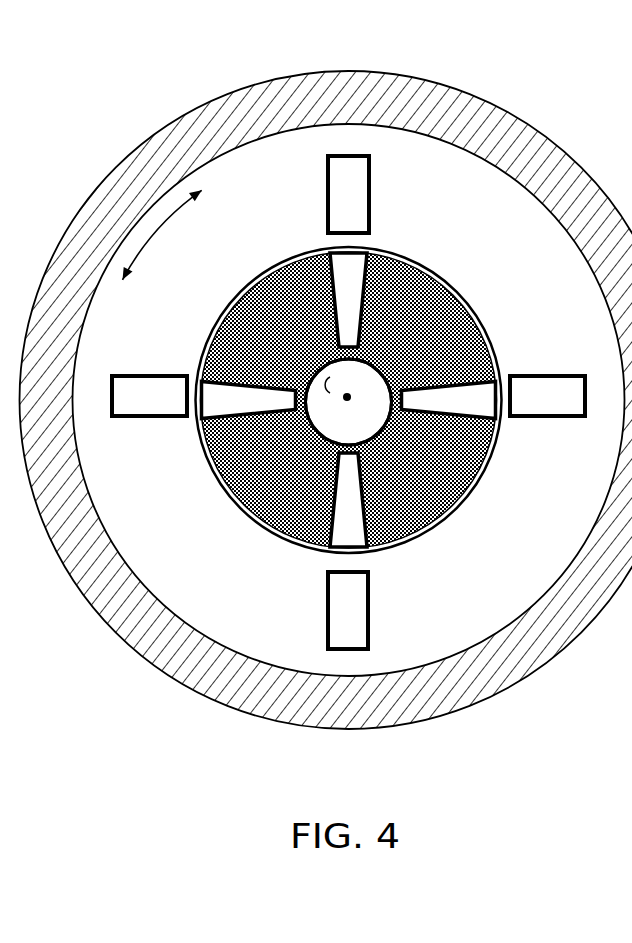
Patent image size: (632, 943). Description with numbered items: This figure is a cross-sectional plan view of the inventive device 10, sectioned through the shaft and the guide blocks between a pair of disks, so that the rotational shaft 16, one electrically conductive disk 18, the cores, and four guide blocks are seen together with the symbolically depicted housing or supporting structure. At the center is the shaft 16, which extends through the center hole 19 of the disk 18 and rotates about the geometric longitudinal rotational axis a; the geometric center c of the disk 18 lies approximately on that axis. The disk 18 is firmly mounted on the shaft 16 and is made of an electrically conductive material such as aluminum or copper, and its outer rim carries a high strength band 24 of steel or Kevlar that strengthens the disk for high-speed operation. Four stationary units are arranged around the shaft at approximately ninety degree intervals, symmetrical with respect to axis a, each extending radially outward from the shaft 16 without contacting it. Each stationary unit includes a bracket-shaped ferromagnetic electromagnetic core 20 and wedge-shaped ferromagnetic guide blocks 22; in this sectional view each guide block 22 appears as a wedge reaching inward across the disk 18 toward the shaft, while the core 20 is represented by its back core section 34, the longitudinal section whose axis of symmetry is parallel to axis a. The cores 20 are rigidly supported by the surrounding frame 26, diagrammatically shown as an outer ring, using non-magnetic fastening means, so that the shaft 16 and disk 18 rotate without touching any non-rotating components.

The inventive device 10 is at (326, 402).
The rotational shaft 16 is at (262, 463).
The electrically conductive disk 18 is at (341, 409).
The center hole 19 is at (327, 423).
The electromagnetic core 20 is at (348, 402).
The guide block 22 is at (346, 313).
The high strength band 24 is at (243, 360).
The frame 26 is at (527, 116).
The back core section 34 is at (370, 205).